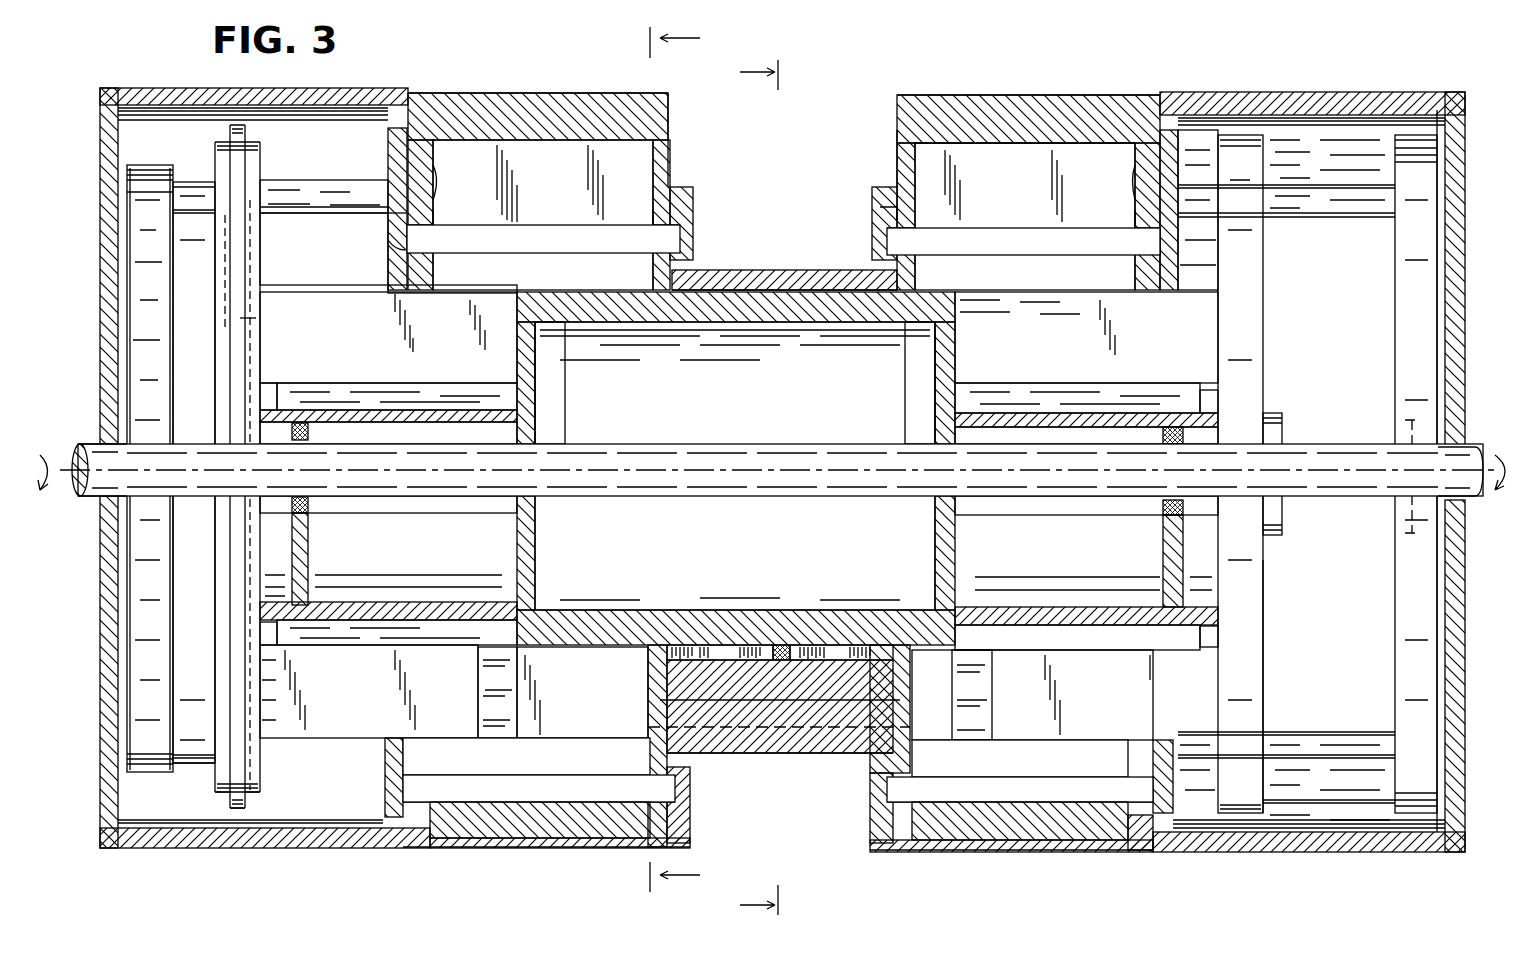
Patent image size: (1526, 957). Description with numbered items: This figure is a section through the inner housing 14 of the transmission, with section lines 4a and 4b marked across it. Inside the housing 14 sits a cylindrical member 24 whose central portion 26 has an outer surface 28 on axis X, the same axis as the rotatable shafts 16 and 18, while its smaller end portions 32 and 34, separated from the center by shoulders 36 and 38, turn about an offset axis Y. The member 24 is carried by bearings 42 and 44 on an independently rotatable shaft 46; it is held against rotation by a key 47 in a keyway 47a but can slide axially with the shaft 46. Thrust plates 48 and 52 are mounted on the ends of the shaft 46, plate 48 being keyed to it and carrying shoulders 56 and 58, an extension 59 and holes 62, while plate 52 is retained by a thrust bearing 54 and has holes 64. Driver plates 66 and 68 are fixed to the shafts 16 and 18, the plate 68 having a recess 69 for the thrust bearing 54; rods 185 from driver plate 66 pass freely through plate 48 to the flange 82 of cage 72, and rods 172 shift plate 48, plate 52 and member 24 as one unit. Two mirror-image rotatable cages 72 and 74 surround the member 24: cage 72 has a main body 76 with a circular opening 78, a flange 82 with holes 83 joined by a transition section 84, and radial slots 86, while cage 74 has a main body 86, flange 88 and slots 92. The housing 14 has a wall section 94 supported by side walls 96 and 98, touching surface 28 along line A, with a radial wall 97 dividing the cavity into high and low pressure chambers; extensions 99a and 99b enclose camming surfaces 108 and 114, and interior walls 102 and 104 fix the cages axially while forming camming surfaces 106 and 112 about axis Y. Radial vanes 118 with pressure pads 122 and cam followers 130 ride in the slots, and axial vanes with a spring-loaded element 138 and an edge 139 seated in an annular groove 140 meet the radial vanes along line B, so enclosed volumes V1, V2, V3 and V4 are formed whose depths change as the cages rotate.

The housing 14 is at (355, 88).
The rotatable shaft 16 is at (96, 440).
The rotatable shaft 18 is at (1465, 447).
The cylindrical member 24 is at (574, 655).
The central portion 26 is at (605, 610).
The surface 28 is at (575, 292).
The end portion 32 is at (352, 405).
The end portion 34 is at (1030, 408).
The shoulder 36 is at (480, 328).
The shoulder 38 is at (975, 340).
The bearing 42 is at (310, 500).
The bearing 44 is at (1163, 510).
The rotatable shaft 46 is at (782, 444).
The key 47 is at (765, 655).
The keyway 47a is at (850, 655).
The thrust plate 48 is at (214, 570).
The thrust plate 52 is at (1265, 685).
The thrust bearing 54 is at (1282, 428).
The shoulder 56 is at (220, 796).
The shoulder 58 is at (245, 800).
The extension 59 is at (240, 796).
The holes 62 is at (225, 240).
The holes 64 is at (1252, 175).
The driver plate 66 is at (172, 366).
The driver plate 68 is at (1392, 258).
The recess 69 is at (1400, 540).
The rotatable cage 72 is at (542, 85).
The rotatable cage 74 is at (1030, 87).
The main body 76 is at (655, 93).
The circular opening 78 is at (395, 300).
The flange 82 is at (386, 130).
The holes 83 is at (392, 235).
The transition section 84 is at (400, 258).
The radial slots 86 is at (918, 95).
The flange 88 is at (1178, 170).
The radial slots 92 is at (1034, 177).
The wall section 94 is at (755, 270).
The side wall 96 is at (670, 152).
The wall 97 is at (688, 690).
The side wall 98 is at (895, 150).
The extension 99a is at (702, 188).
The extension 99b is at (868, 182).
The interior wall 102 is at (434, 160).
The interior wall 104 is at (1136, 172).
The camming surface 106 is at (433, 222).
The camming surface 108 is at (652, 205).
The camming surface 112 is at (1134, 208).
The camming surface 114 is at (886, 215).
The radial vane 118 is at (532, 215).
The pressure pads 122 is at (560, 322).
The cam follower 130 is at (436, 224).
The extended element 138 is at (262, 395).
The edge 139 is at (238, 318).
The annular groove 140 is at (243, 265).
The rod 172 is at (205, 482).
The rods 185 is at (190, 172).
The enclosed volume V1 is at (637, 322).
The enclosed volume V2 is at (925, 322).
The enclosed volume V3 is at (584, 731).
The enclosed volume V4 is at (940, 705).
The axis of rotation X is at (684, 452).
The axis of rotation Y is at (614, 523).
The line of contact A is at (706, 285).
The line of contact B is at (400, 296).
The section line 4a is at (688, 459).
The section line 4b is at (743, 488).